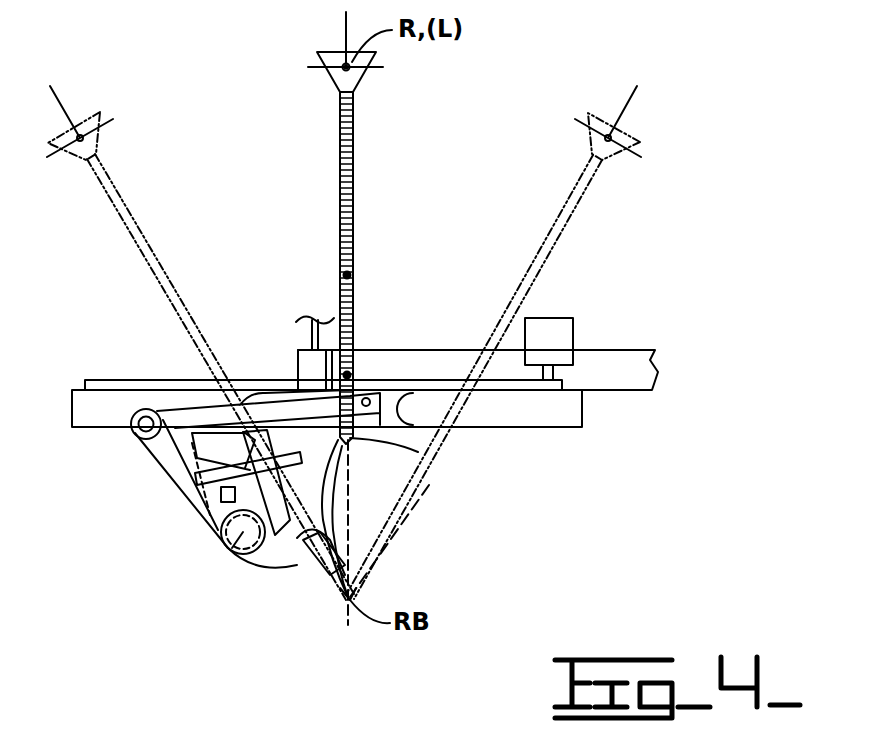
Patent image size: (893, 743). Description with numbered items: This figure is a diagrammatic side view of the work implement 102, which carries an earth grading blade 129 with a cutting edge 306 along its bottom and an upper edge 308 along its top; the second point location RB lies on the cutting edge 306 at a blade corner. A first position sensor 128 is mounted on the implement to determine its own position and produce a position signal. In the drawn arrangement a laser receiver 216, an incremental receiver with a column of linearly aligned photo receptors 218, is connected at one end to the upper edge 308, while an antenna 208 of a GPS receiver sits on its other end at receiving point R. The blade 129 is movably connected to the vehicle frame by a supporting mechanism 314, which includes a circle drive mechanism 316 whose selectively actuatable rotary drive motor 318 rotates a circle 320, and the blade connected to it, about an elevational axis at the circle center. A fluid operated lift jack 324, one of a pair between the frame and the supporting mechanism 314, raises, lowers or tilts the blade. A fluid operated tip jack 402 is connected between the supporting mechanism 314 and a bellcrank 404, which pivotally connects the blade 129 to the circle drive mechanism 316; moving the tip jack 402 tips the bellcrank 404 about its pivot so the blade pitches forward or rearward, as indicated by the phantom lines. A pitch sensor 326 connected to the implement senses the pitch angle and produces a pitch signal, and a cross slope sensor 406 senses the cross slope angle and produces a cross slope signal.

The work implement 102 is at (410, 530).
The first position sensor 128 is at (360, 210).
The earth grading blade 129 is at (333, 577).
The second antenna 208 is at (331, 52).
The second laser receiver 216 is at (355, 148).
The photo receptors 218 is at (353, 258).
The cutting edge 306 is at (352, 598).
The upper edge 308 is at (402, 463).
The supporting mechanism 314 is at (623, 365).
The circle drive mechanism 316 is at (403, 377).
The rotary drive motor 318 is at (562, 320).
The circle 320 is at (553, 412).
The lift jack 324 is at (290, 350).
The pitch sensor 326 is at (235, 555).
The tip jack 402 is at (285, 415).
The bellcrank 404 is at (165, 455).
The cross slope sensor 406 is at (213, 512).